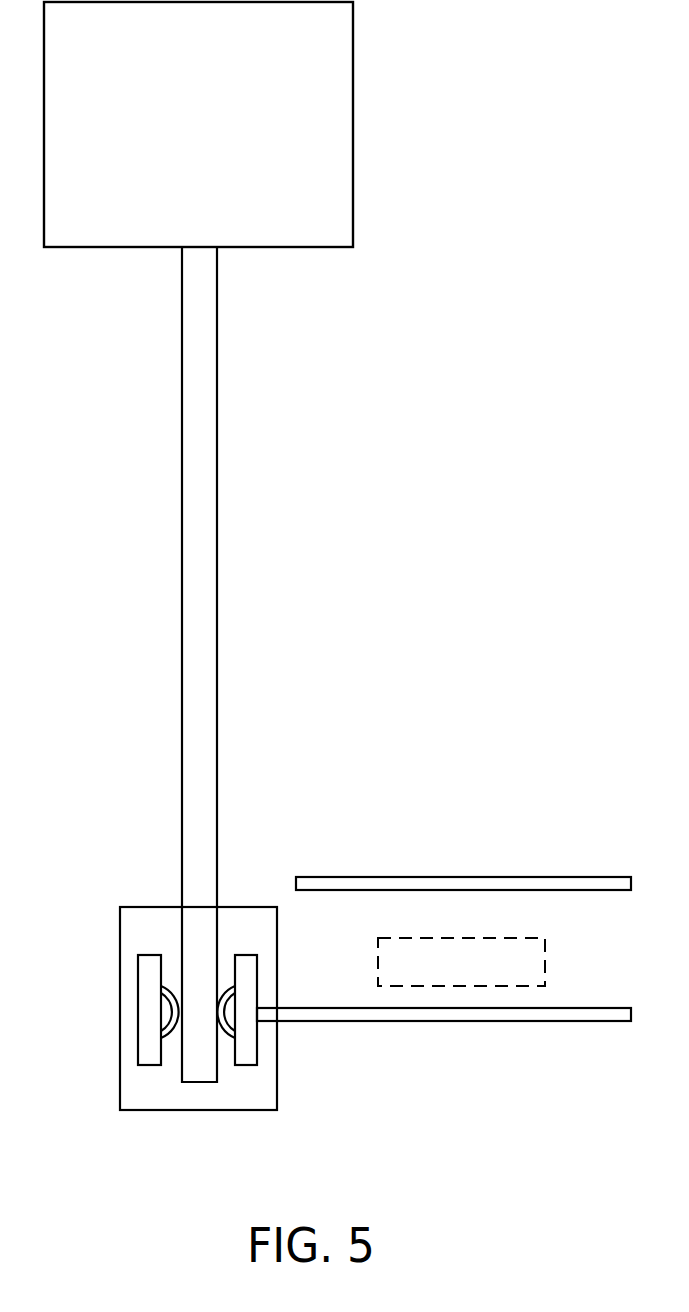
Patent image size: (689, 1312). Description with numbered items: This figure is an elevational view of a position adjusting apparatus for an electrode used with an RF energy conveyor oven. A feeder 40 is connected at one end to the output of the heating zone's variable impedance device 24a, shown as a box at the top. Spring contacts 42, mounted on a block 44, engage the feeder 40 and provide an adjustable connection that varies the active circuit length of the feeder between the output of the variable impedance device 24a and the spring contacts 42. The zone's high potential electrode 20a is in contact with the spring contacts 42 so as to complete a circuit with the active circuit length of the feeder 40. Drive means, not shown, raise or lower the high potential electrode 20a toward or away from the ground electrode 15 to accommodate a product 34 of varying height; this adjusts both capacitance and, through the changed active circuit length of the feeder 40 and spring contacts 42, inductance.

The variable impedance device 24a is at (228, 133).
The feeder 40 is at (205, 665).
The block 44 is at (252, 1080).
The spring contacts 42 is at (150, 973).
The ground electrode 15 is at (503, 883).
The product 34 is at (437, 967).
The high potential electrode 20a is at (560, 1013).